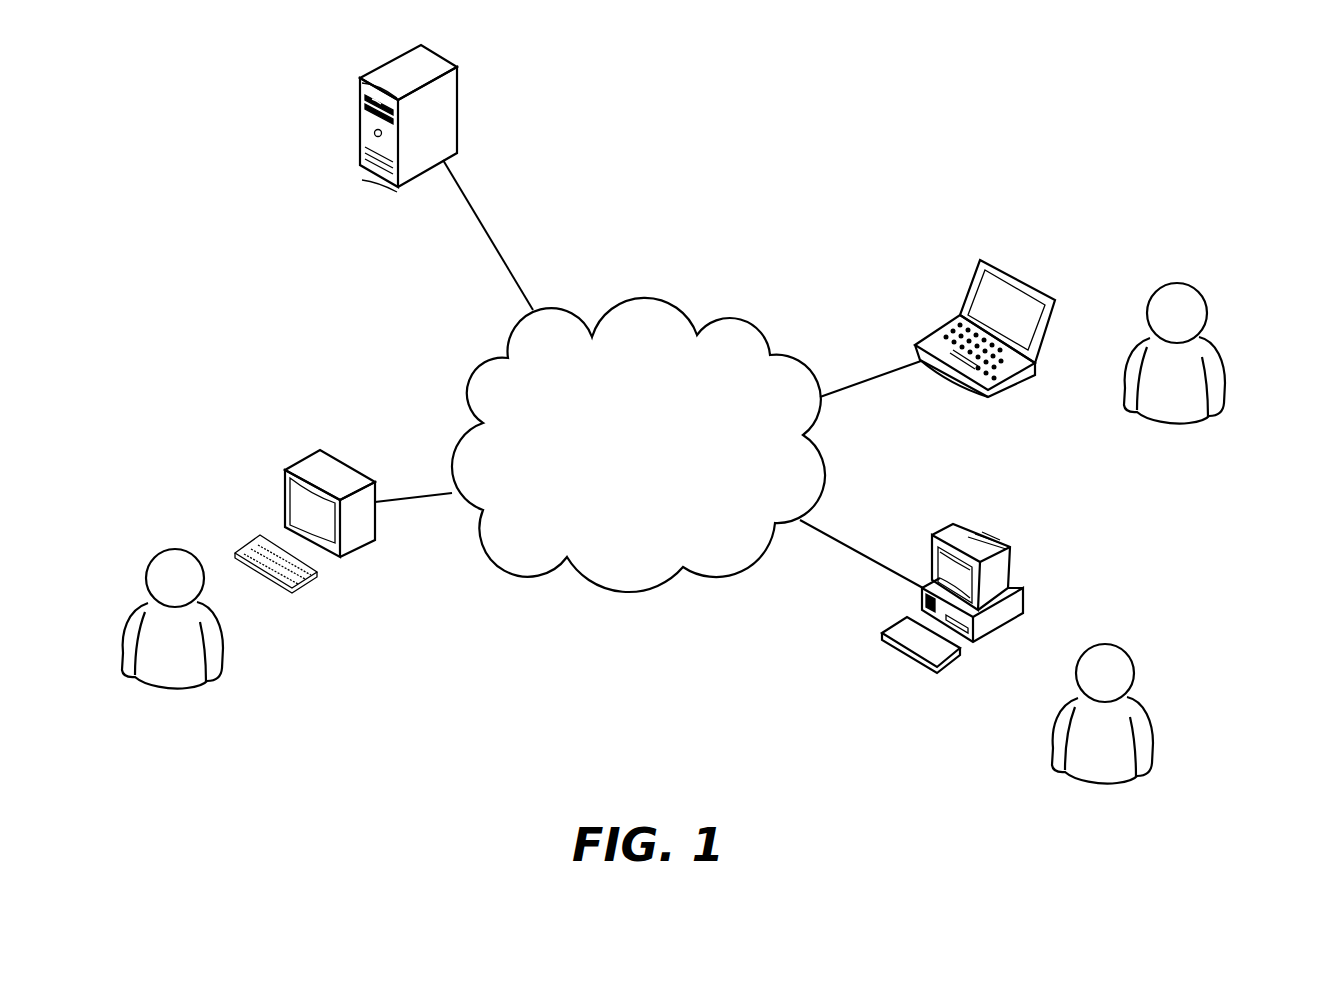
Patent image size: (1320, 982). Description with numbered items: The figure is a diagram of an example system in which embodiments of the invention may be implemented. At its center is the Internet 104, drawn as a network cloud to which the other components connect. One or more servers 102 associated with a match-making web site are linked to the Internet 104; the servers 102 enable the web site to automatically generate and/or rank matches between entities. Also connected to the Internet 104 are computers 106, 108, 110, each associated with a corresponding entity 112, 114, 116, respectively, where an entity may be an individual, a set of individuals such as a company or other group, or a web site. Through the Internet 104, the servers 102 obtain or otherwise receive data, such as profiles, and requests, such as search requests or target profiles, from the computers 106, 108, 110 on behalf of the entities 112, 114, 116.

The server 102 is at (459, 112).
The Internet 104 is at (661, 466).
The computer 106 is at (340, 461).
The computer 108 is at (1007, 275).
The computer 110 is at (987, 553).
The entity 112 is at (188, 548).
The entity 114 is at (1202, 308).
The entity 116 is at (1132, 662).